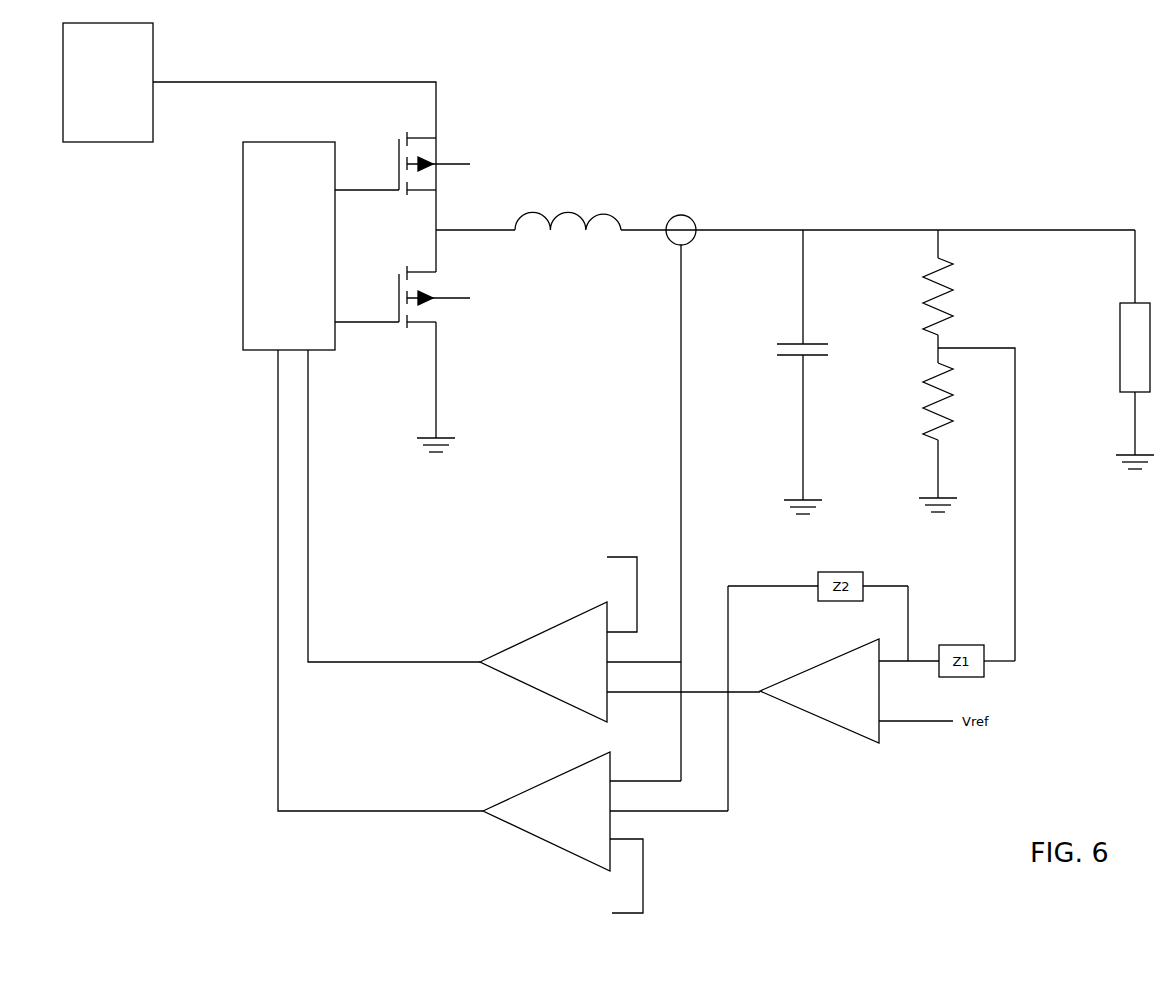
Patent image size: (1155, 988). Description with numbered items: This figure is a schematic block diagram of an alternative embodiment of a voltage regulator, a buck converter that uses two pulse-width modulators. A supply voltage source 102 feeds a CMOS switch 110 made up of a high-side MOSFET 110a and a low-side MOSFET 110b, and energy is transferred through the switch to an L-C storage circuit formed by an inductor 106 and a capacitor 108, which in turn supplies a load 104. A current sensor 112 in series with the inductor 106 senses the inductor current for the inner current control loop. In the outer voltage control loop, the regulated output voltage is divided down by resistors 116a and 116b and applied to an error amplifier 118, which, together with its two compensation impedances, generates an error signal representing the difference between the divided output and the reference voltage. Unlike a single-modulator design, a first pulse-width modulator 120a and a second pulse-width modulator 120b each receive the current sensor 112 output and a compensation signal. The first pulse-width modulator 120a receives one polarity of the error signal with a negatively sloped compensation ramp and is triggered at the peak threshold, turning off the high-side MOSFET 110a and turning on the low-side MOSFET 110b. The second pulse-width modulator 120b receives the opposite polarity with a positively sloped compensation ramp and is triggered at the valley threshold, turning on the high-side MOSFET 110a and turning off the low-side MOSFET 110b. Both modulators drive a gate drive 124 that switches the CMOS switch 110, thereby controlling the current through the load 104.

The supply voltage source 102 is at (108, 82).
The gate drive 124 is at (289, 246).
The CMOS switch 110 is at (402, 292).
The high-side MOSFET 110a is at (402, 163).
The low-side MOSFET 110b is at (402, 297).
The inductor 106 is at (568, 211).
The current sensor 112 is at (681, 487).
The capacitor 108 is at (786, 372).
The resistor 116a is at (919, 296).
The resistor 116b is at (924, 437).
The load 104 is at (1116, 349).
The first pulse-width modulator 120a is at (558, 636).
The second pulse-width modulator 120b is at (563, 842).
The error amplifier 118 is at (819, 691).